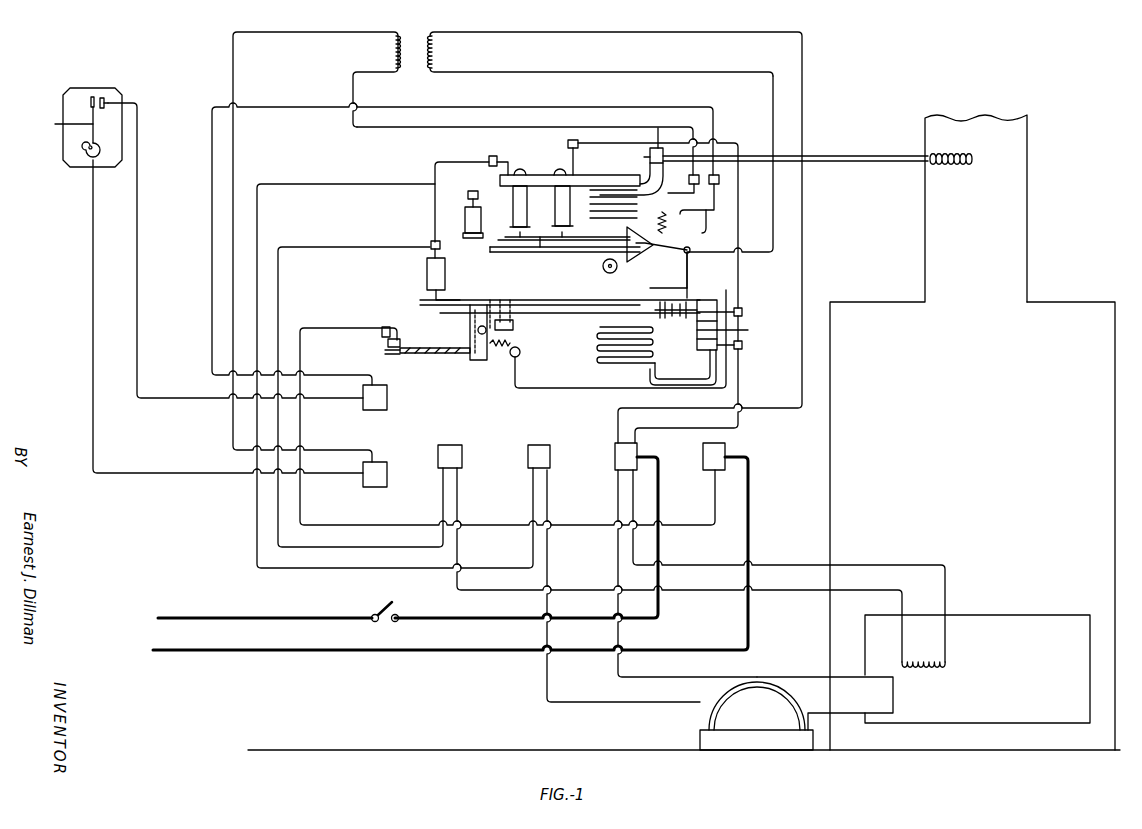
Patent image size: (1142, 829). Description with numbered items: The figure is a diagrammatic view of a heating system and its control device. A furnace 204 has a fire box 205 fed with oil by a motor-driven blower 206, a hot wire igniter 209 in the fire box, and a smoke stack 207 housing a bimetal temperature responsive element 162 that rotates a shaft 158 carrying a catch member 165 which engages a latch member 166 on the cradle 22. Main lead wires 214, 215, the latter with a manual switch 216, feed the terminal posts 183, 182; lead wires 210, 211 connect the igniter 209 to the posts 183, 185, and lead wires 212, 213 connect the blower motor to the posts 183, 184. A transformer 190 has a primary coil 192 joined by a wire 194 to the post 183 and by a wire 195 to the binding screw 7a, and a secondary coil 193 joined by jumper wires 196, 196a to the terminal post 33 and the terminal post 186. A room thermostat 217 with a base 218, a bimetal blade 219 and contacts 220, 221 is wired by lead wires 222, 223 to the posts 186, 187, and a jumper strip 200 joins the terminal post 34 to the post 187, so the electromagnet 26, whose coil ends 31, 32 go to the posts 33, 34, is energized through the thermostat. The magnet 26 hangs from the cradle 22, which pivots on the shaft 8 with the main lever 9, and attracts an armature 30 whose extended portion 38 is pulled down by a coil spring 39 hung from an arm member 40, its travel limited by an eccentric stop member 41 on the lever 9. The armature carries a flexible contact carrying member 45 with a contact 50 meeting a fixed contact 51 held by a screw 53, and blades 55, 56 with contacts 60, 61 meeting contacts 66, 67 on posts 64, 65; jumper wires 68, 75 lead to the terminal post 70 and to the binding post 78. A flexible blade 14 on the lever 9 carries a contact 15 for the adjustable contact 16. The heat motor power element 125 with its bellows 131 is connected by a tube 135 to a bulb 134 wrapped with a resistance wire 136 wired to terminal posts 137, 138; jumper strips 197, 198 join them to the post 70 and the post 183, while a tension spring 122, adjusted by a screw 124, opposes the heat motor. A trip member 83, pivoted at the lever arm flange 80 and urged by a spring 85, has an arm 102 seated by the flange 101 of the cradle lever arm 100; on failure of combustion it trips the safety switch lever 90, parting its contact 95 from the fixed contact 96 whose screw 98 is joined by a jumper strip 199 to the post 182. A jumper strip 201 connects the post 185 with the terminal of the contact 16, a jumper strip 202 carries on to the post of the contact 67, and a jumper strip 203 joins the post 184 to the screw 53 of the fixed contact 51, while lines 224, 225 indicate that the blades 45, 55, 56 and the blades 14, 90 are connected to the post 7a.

The binding screw 7a is at (690, 253).
The shaft 8 is at (647, 243).
The main lever member 9 is at (551, 306).
The flexible blade 14 is at (465, 310).
The upwardly facing contact member 15 is at (432, 303).
The downwardly facing contact member 16 is at (426, 287).
The cradle 22 is at (540, 166).
The electromagnet 26 is at (612, 195).
The armature 30 is at (614, 222).
The coil end 31 is at (697, 199).
The coil end 32 is at (706, 228).
The terminal post 33 is at (694, 176).
The terminal post 34 is at (720, 180).
The extended portion of armature 38 is at (664, 242).
The coil spring 39 is at (668, 226).
The arm member 40 is at (677, 186).
The adjustable stop member 41 is at (600, 269).
The contact carrying member 45 is at (540, 248).
The upwardly facing contact member 50 is at (468, 240).
The fixed contact member 51 is at (464, 238).
The screw 53 is at (479, 193).
The contact carrying blade 55 is at (540, 237).
The contact carrying blade 56 is at (565, 233).
The contact member 60 is at (550, 225).
The contact member 61 is at (559, 239).
The post 64 is at (557, 173).
The post 65 is at (521, 216).
The contact member 66 is at (566, 222).
The contact member 67 is at (519, 231).
The jumper wire 68 is at (578, 160).
The terminal post 70 is at (572, 140).
The jumper wire 75 is at (511, 174).
The binding post 78 is at (488, 158).
The flange portion 80 is at (490, 318).
The trip member 83 is at (487, 358).
The coil spring 85 is at (521, 350).
The contact supporting member 90 is at (440, 356).
The upwardly facing contact member 95 is at (392, 353).
The fixed contact member 96 is at (386, 342).
The screw 98 is at (383, 327).
The lever arm 100 is at (532, 253).
The outturned flange portion 101 is at (492, 253).
The arm 102 is at (514, 330).
The tension spring 122 is at (668, 322).
The adjustment screw 124 is at (710, 318).
The power element 125 is at (592, 353).
The bellows member 131 is at (606, 364).
The bulb element 134 is at (720, 304).
The tube 135 is at (665, 385).
The resistance wire coil 136 is at (748, 330).
The terminal post 137 is at (742, 308).
The terminal post 138 is at (744, 346).
The rotatable shaft 158 is at (857, 164).
The temperature responsive element 162 is at (956, 164).
The catch member 165 is at (658, 128).
The latch member 166 is at (650, 150).
The terminal post 182 is at (706, 460).
The terminal post 183 is at (622, 460).
The terminal post 184 is at (532, 463).
The terminal post 185 is at (446, 465).
The terminal post 186 is at (376, 487).
The terminal post 187 is at (373, 410).
The transformer 190 is at (417, 63).
The primary coil 192 is at (440, 53).
The secondary coil 193 is at (392, 53).
The wire 194 is at (672, 34).
The wire 195 is at (745, 70).
The jumper wire 196 is at (399, 130).
The jumper wire 196a is at (235, 154).
The jumper strip 197 is at (740, 236).
The jumper strip 198 is at (742, 396).
The jumper strip 199 is at (304, 328).
The jumper strip 200 is at (211, 231).
The jumper strip 201 is at (337, 248).
The jumper strip 202 is at (435, 167).
The jumper strip 203 is at (296, 184).
The heating apparatus 204 is at (1113, 316).
The fire box 205 is at (977, 669).
The blower 206 is at (781, 677).
The smoke stack 207 is at (1024, 252).
The hot wire igniter 209 is at (918, 676).
The lead wire 210 is at (865, 565).
The lead wire 211 is at (798, 590).
The lead wire 212 is at (668, 677).
The lead wire 213 is at (598, 702).
The main lead wire 214 is at (452, 651).
The main lead wire 215 is at (445, 618).
The manually operable switch 216 is at (373, 610).
The thermostat 217 is at (59, 149).
The supporting base 218 is at (77, 168).
The bimetal blade 219 is at (61, 125).
The contact member 220 is at (96, 95).
The contact member 221 is at (111, 100).
The lead wire 222 is at (96, 456).
The lead wire 223 is at (137, 376).
The line 224 is at (685, 258).
The line 225 is at (574, 405).